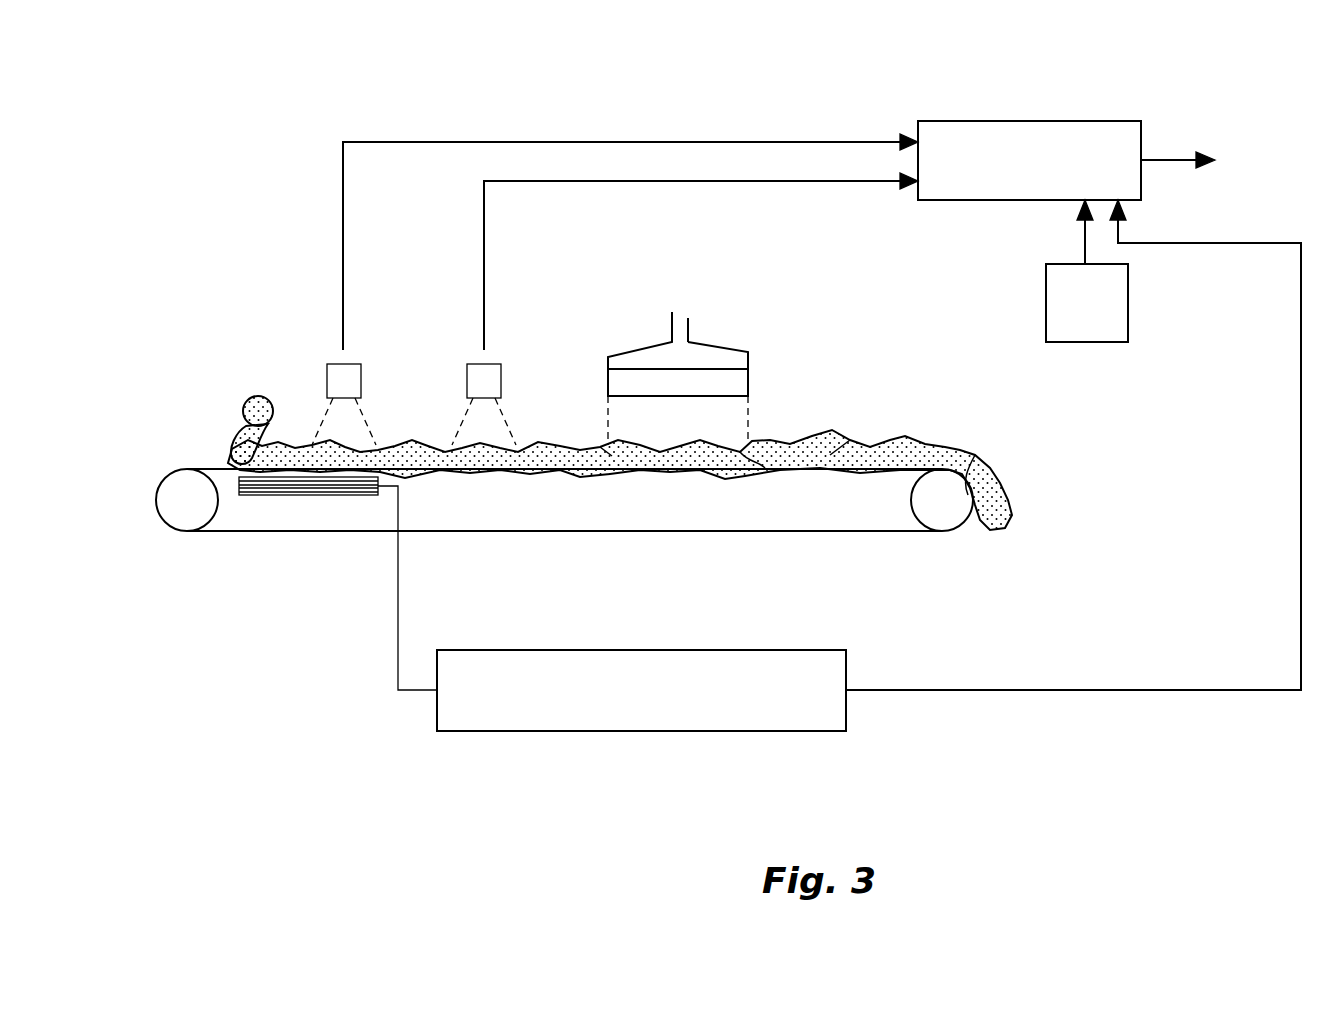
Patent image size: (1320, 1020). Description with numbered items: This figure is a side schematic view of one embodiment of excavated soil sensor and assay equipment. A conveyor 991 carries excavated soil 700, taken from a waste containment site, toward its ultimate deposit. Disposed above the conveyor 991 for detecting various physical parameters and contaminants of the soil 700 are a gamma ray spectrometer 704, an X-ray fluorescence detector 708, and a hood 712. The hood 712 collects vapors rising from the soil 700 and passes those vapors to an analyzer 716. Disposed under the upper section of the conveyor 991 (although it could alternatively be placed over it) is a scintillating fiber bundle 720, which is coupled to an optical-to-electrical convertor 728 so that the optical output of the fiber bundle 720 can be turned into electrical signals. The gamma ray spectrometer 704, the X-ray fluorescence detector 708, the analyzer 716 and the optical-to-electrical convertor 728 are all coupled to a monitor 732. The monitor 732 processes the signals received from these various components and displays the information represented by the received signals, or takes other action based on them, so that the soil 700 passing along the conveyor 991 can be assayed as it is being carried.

The excavated soil 700 is at (998, 470).
The gamma ray spectrometer 704 is at (342, 382).
The X-ray fluorescence detector 708 is at (495, 380).
The hood 712 is at (748, 360).
The analyzer 716 is at (1118, 306).
The scintillating fiber bundle 720 is at (303, 497).
The optical-to-electrical convertor 728 is at (575, 731).
The monitor 732 is at (1023, 120).
The conveyor 991 is at (511, 532).